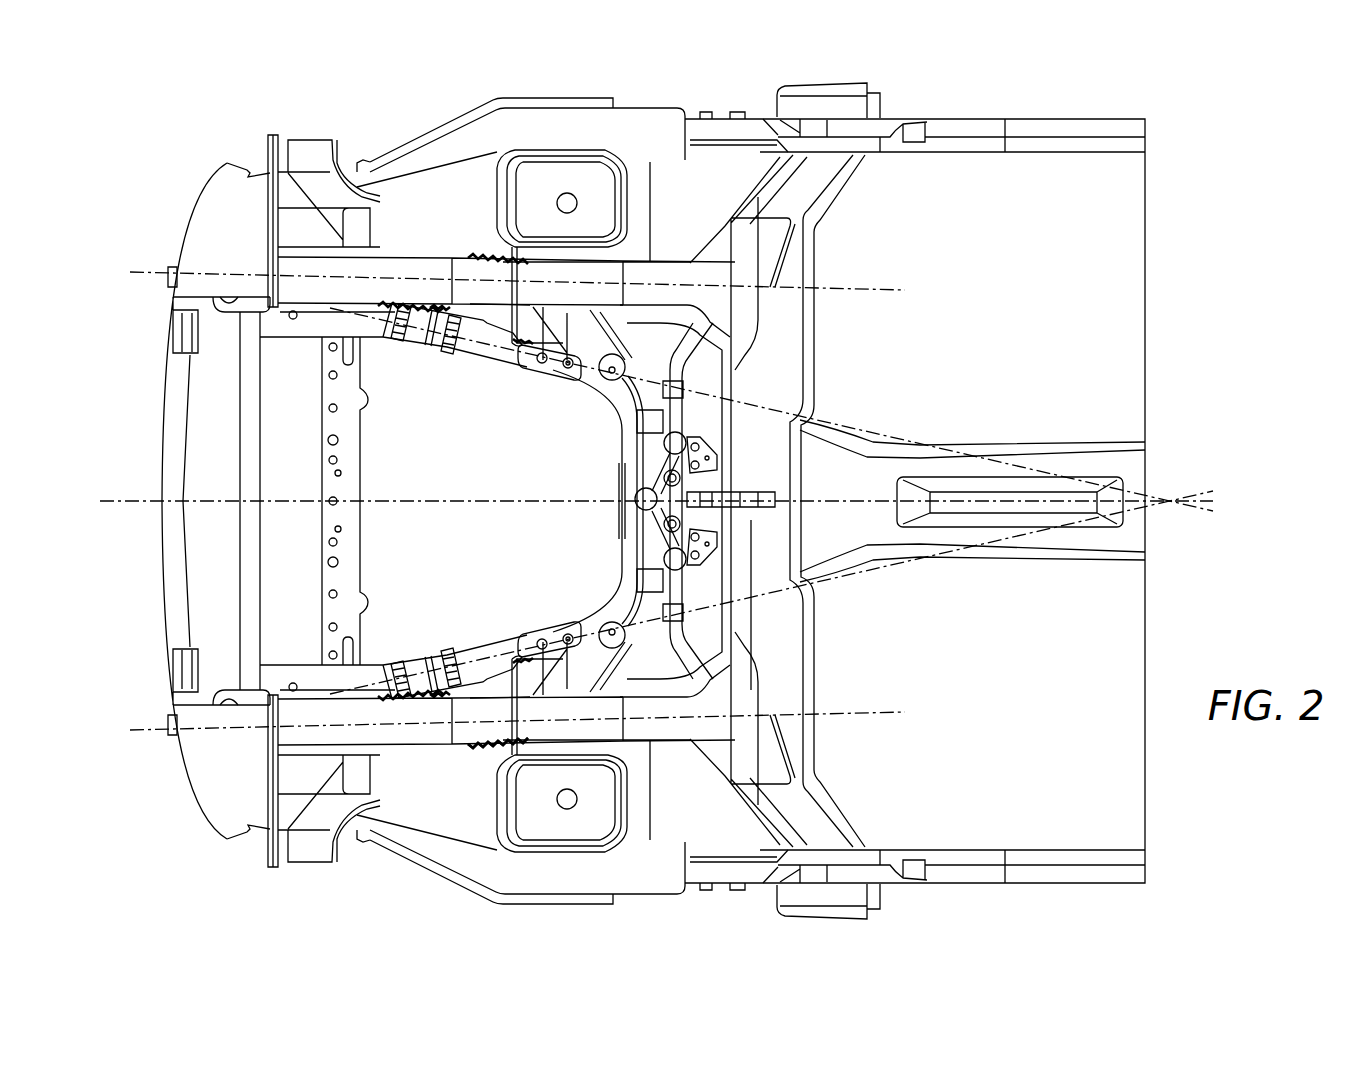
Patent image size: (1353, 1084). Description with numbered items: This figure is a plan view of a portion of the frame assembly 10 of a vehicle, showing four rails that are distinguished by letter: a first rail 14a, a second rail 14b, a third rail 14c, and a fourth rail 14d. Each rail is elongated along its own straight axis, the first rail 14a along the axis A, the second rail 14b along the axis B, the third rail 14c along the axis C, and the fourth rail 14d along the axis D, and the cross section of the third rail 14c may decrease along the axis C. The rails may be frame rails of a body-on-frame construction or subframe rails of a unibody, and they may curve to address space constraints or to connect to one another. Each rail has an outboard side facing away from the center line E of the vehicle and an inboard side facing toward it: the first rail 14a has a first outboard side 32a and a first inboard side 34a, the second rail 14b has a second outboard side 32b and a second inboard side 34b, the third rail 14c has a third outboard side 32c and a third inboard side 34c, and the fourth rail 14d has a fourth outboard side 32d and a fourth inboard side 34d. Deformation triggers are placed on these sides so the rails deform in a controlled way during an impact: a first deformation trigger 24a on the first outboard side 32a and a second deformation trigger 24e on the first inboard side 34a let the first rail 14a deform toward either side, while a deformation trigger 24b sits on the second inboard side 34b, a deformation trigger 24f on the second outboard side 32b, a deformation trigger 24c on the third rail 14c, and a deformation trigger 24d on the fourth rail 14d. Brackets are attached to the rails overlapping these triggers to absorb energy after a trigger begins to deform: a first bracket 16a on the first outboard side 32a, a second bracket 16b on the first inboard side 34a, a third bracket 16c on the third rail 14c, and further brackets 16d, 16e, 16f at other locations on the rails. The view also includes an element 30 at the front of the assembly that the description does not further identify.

The frame assembly 10 is at (154, 126).
The bumper beam 30 is at (160, 413).
The first inboard side 34a is at (303, 292).
The second inboard side 34b is at (303, 710).
The third inboard side 34c is at (455, 652).
The fourth inboard side 34d is at (455, 350).
The first outboard side 32a is at (330, 303).
The second outboard side 32b is at (330, 699).
The third outboard side 32c is at (496, 698).
The fourth outboard side 32d is at (496, 304).
The first bracket 16a is at (485, 256).
The second bracket 16b is at (383, 709).
The third bracket 16c is at (408, 662).
The strut member 16d is at (408, 340).
The bracket member 16e is at (383, 293).
The rail weld 16f is at (485, 746).
The first rail 14a is at (690, 277).
The second rail 14b is at (690, 725).
The third rail 14c is at (557, 629).
The fourth rail 14d is at (557, 373).
The first deformation trigger 24a is at (520, 370).
The deformation trigger 24b is at (414, 702).
The deformation trigger 24c is at (440, 690).
The deformation trigger 24d is at (440, 312).
The second deformation trigger 24e is at (414, 300).
The deformation trigger 24f is at (520, 632).
The axis A is at (875, 289).
The axis B is at (875, 713).
The axis C is at (873, 570).
The axis D is at (873, 432).
The center line E is at (810, 501).